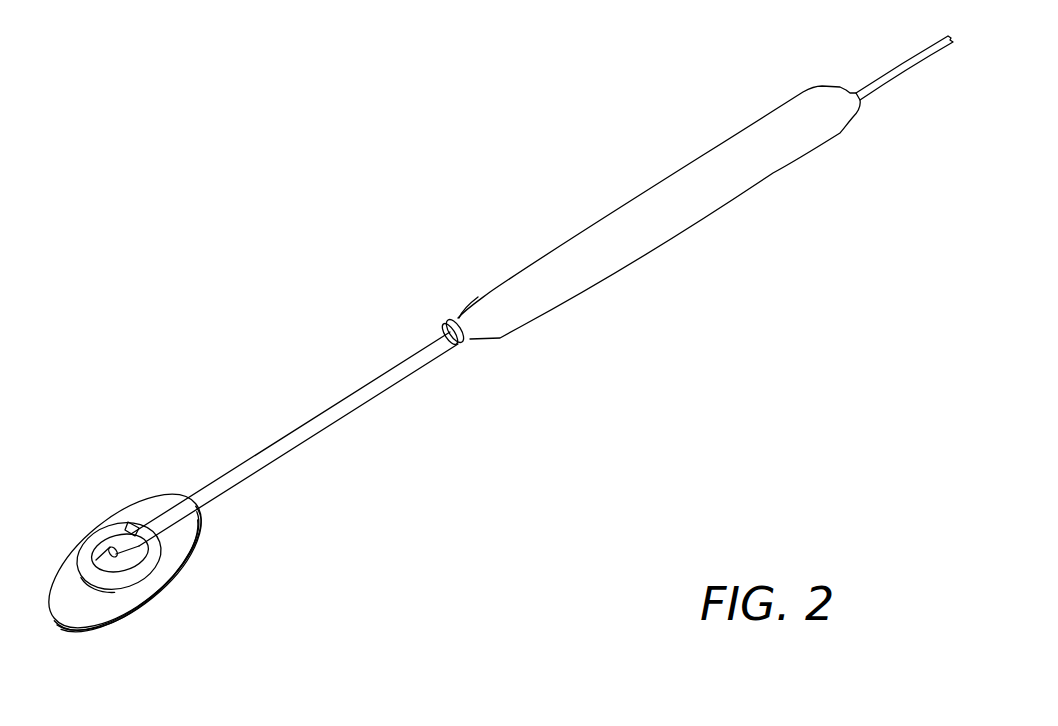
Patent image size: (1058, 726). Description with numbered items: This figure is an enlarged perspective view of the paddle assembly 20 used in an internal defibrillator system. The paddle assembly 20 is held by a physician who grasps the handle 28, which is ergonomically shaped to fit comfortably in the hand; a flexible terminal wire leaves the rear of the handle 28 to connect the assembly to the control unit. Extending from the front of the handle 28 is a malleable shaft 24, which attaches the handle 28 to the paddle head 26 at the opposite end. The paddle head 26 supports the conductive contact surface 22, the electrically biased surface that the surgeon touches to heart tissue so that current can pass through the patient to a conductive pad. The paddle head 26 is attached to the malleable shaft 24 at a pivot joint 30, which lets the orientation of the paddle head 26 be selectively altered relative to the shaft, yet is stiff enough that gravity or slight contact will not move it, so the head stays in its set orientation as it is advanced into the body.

The paddle assembly 20 is at (400, 213).
The conductive contact surface 22 is at (128, 615).
The malleable shaft 24 is at (360, 397).
The paddle head 26 is at (95, 518).
The handle 28 is at (687, 205).
The pivot joint 30 is at (123, 530).